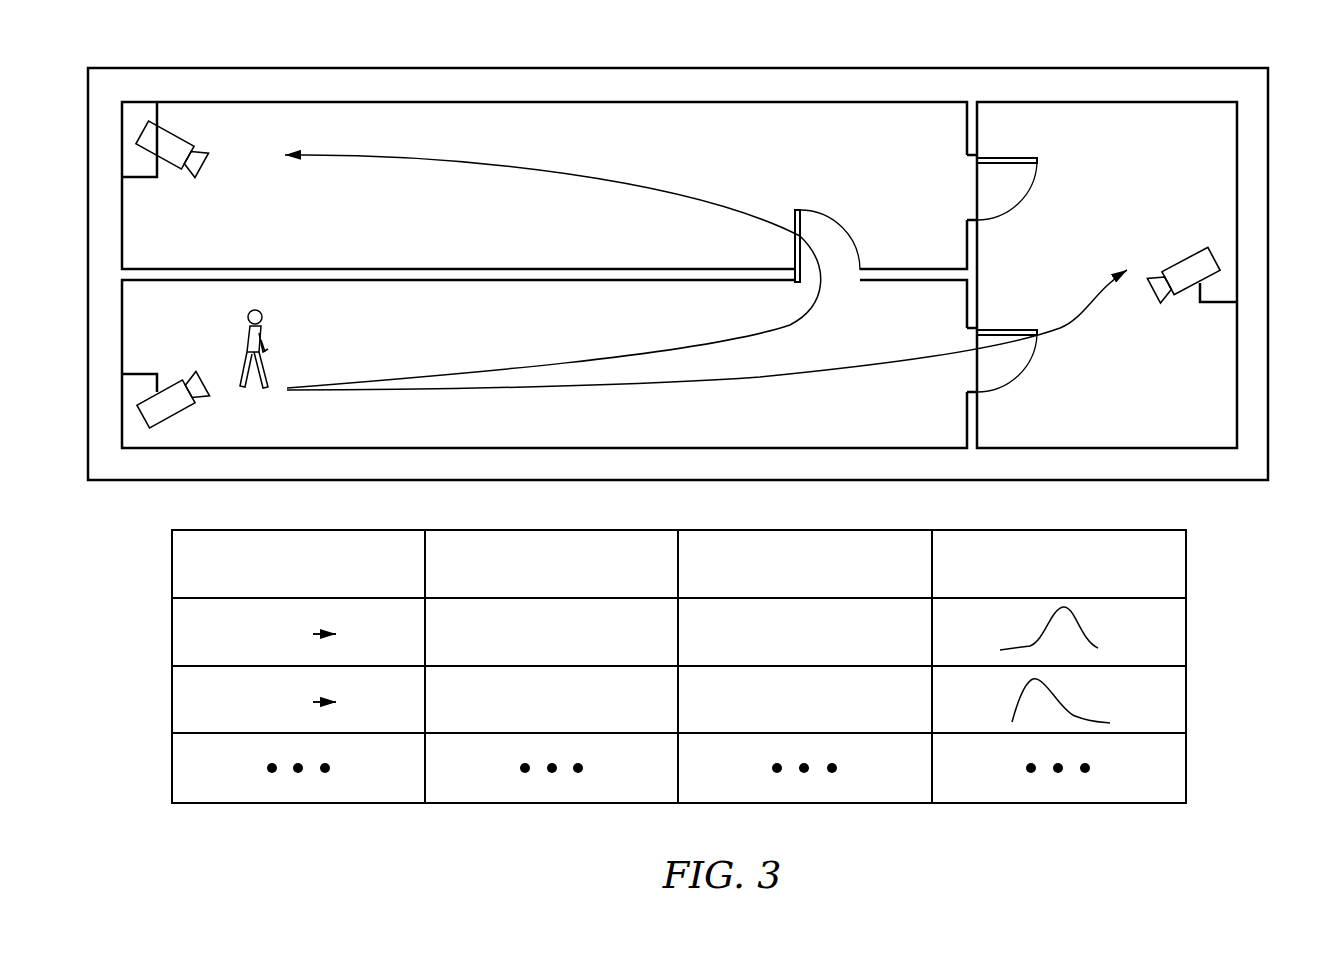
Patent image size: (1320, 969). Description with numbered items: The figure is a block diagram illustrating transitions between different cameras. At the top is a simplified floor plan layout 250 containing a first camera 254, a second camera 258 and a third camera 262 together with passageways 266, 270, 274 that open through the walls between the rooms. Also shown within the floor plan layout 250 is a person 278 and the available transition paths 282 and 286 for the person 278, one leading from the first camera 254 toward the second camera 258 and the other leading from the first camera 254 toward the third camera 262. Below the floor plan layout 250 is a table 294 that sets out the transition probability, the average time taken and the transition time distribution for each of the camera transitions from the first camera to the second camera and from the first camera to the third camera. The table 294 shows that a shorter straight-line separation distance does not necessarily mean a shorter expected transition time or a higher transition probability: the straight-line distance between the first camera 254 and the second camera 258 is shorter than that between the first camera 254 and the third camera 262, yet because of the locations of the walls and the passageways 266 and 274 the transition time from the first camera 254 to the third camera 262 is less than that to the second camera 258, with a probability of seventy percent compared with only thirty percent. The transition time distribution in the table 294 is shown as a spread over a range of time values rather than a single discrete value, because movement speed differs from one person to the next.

The floor plan layout 250 is at (141, 26).
The Cam_1 254 is at (182, 412).
The Cam_2 258 is at (170, 165).
The Cam_3 262 is at (1195, 250).
The passageway 266 is at (1032, 365).
The passageway 270 is at (1030, 192).
The passageway 274 is at (833, 220).
The person 278 is at (262, 341).
The transition path 282 is at (597, 172).
The transition path 286 is at (810, 373).
The table 294 is at (1220, 752).